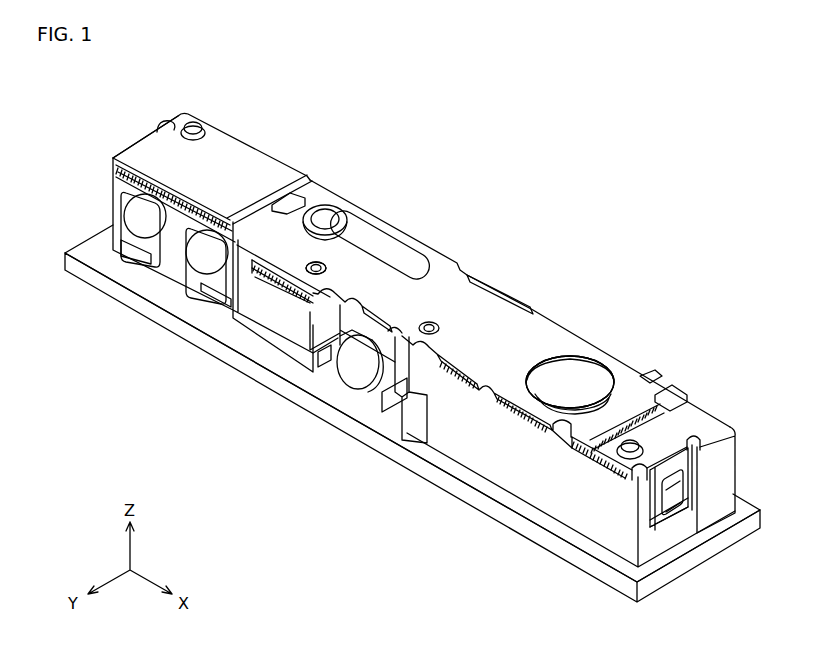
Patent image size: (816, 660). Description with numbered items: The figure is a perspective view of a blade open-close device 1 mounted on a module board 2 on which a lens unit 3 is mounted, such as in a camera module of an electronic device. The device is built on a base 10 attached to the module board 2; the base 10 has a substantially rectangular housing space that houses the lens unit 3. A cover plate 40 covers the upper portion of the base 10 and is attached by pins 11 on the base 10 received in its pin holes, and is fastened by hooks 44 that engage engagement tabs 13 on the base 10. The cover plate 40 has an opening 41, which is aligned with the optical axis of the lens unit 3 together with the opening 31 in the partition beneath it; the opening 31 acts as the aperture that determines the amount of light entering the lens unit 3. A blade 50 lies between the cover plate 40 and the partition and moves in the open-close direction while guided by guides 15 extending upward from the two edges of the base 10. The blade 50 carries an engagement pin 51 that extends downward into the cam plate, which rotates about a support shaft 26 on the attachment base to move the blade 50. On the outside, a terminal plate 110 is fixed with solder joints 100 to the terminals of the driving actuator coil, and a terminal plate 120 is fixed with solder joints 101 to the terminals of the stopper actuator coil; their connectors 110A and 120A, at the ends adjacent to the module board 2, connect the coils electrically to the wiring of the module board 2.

The blade open-close device 1 is at (516, 98).
The module board 2 is at (457, 490).
The lens unit 3 is at (581, 378).
The base 10 is at (590, 517).
The pins 11 is at (196, 125).
The engagement tabs 13 is at (673, 490).
The guides 15 is at (523, 418).
The support shaft 26 is at (317, 265).
The opening 31 is at (570, 382).
The cover plate 40 is at (698, 414).
The opening 41 is at (552, 343).
The hooks 44 is at (675, 517).
The blade 50 is at (375, 245).
The engagement pin 51 is at (326, 216).
The solder joints 100 is at (138, 210).
The solder joints 101 is at (355, 375).
The terminal plate 110 is at (182, 217).
The connectors 110A is at (133, 255).
The terminal plate 120 is at (311, 380).
The connectors 120A is at (327, 368).